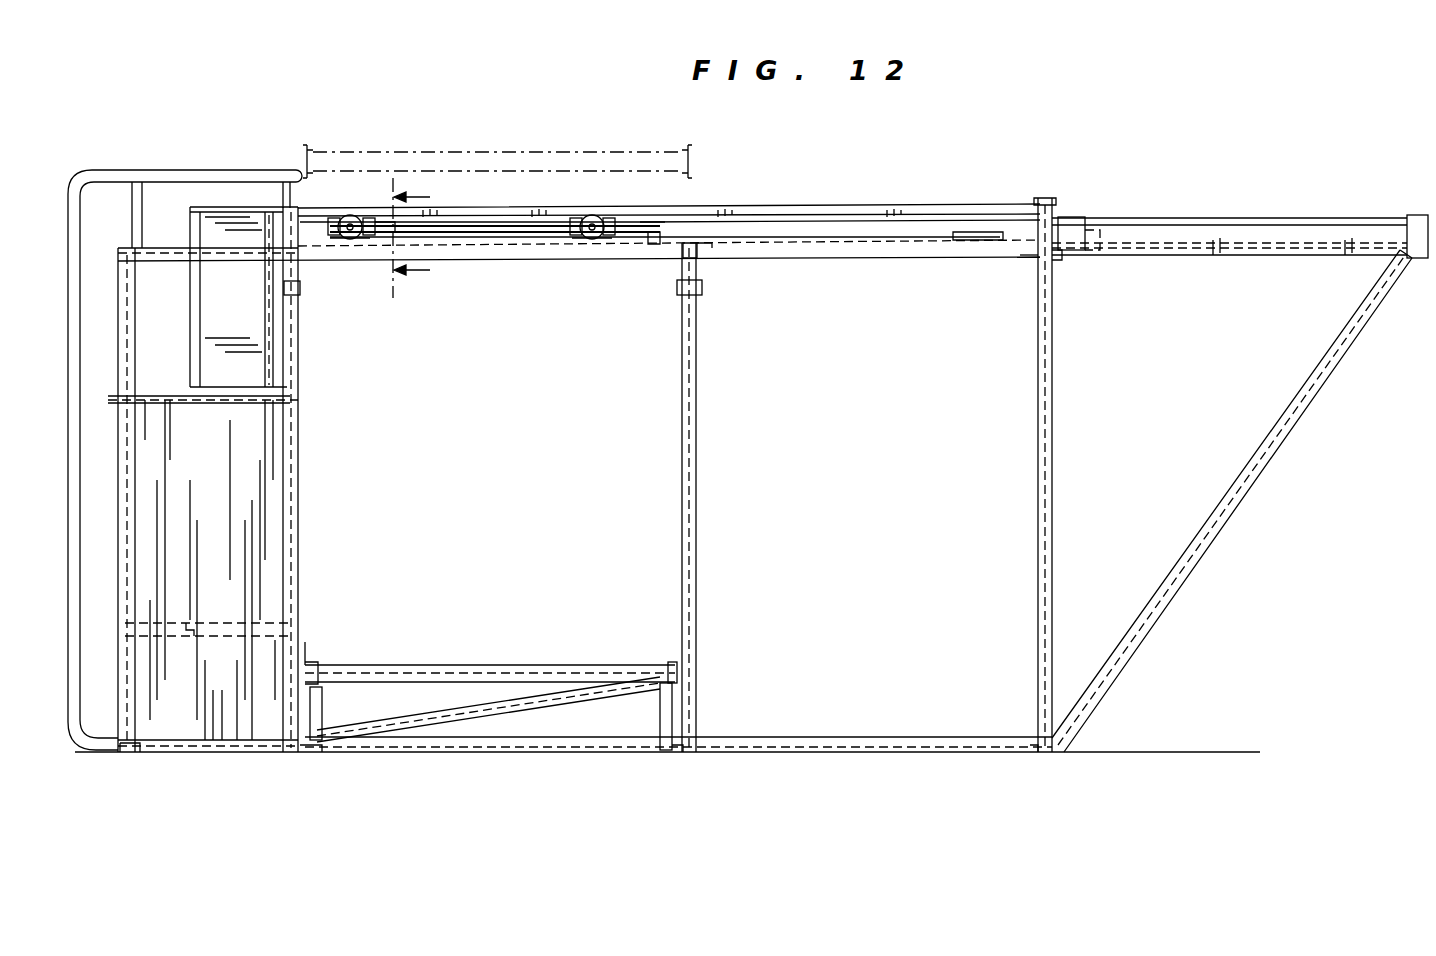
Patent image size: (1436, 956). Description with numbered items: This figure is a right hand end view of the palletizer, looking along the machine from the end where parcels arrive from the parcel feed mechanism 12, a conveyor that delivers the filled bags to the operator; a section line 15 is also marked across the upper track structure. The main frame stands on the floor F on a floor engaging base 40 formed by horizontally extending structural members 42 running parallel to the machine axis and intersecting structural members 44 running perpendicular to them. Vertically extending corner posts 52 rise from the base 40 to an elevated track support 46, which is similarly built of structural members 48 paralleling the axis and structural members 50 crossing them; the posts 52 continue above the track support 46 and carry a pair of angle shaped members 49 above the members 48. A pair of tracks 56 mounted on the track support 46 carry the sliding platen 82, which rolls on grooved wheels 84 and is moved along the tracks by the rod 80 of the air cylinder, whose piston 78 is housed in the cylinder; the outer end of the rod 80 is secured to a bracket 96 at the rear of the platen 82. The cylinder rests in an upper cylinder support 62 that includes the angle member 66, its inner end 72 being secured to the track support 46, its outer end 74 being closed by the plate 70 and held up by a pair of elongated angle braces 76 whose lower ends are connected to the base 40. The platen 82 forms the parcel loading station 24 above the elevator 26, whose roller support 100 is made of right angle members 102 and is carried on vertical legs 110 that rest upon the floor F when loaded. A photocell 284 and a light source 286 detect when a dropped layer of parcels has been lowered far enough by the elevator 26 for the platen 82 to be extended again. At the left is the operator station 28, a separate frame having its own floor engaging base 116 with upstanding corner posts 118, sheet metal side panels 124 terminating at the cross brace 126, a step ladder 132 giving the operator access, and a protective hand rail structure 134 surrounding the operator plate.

The parcel feed mechanism 12 is at (508, 150).
The section line 15 is at (414, 237).
The parcel loading station 24 is at (482, 202).
The elevator 26 is at (613, 666).
The operator station 28 is at (180, 336).
The floor engaging base 40 is at (865, 736).
The horizontally extending structural members 42 is at (566, 740).
The horizontally extending structural members 44 is at (318, 758).
The elevated track support 46 is at (566, 264).
The structural members 48 is at (530, 255).
The angle shaped members 49 is at (832, 207).
The structural members 50 is at (700, 258).
The corner posts 52 is at (300, 371).
The tracks 56 is at (456, 240).
The upper cylinder support 62 is at (1270, 259).
The angle member 66 is at (1150, 252).
The plate 70 is at (1428, 262).
The inner end 72 is at (1057, 260).
The outer end 74 is at (1407, 262).
The angle braces 76 is at (1216, 522).
The piston 78 is at (1102, 228).
The rod 80 is at (948, 236).
The platen 82 is at (381, 218).
The wheels 84 is at (346, 216).
The bracket 96 is at (655, 246).
The roller support 100 is at (423, 684).
The right angle members 102 is at (322, 676).
The vertical legs 110 is at (662, 725).
The floor engaging base 116 is at (147, 757).
The corner posts 118 is at (118, 264).
The side panels 124 is at (265, 530).
The cross brace 126 is at (149, 391).
The step ladder 132 is at (82, 206).
The hand rail structure 134 is at (218, 171).
The photocell 284 is at (702, 289).
The light source 286 is at (284, 292).
The floor F is at (1178, 751).